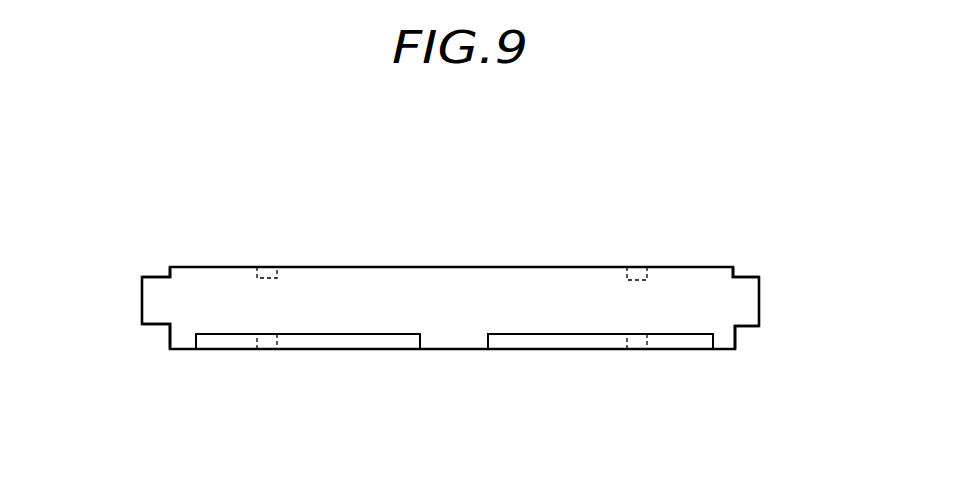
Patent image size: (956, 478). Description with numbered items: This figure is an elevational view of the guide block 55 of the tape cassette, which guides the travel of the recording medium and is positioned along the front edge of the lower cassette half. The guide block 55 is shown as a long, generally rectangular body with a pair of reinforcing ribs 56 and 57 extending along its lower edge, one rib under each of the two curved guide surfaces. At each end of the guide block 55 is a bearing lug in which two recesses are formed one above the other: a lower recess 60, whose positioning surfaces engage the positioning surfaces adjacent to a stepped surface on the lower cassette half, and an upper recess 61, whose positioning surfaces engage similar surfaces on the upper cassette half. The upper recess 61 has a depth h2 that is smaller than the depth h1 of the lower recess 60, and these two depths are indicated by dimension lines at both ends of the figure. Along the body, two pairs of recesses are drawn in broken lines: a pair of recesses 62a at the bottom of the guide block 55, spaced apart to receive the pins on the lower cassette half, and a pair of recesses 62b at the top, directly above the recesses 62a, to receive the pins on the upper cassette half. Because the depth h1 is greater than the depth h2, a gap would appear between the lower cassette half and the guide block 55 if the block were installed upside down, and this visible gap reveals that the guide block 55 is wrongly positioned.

The guide block 55 is at (449, 251).
The reinforcing rib 56 is at (673, 350).
The reinforcing rib 57 is at (230, 342).
The recess 60 is at (160, 332).
The recess 61 is at (168, 268).
The recesses 62a is at (270, 350).
The recesses 62b is at (273, 265).
The depth of recess 60 h1 is at (142, 349).
The depth of recess 61 h2 is at (142, 277).